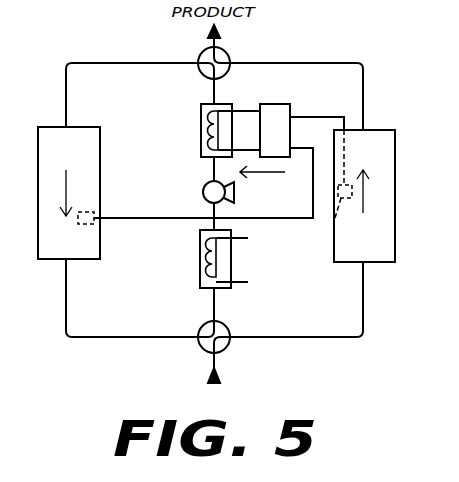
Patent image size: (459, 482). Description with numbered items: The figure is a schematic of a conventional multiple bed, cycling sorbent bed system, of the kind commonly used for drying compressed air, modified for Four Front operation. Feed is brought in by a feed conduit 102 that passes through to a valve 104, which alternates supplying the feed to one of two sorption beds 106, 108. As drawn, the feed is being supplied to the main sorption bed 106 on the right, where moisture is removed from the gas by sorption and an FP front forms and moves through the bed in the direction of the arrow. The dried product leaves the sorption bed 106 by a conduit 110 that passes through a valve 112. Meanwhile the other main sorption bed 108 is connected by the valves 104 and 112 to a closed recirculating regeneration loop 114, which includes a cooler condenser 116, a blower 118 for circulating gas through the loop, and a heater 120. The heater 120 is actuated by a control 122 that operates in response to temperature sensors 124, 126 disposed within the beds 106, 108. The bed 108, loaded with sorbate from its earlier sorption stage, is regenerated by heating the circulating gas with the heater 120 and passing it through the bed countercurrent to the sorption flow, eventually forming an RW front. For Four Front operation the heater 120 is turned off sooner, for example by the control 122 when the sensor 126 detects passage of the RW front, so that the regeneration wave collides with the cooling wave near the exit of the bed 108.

The feed conduit 102 is at (216, 363).
The valve 104 is at (226, 326).
The main sorption bed 106 is at (395, 160).
The main sorption bed 108 is at (100, 152).
The conduit 110 is at (365, 83).
The valve 112 is at (225, 52).
The regeneration loop 114 is at (285, 172).
The cooler condenser 116 is at (230, 263).
The blower 118 is at (258, 183).
The heater 120 is at (228, 104).
The control 122 is at (275, 104).
The temperature sensor 124 is at (335, 218).
The temperature sensor 126 is at (97, 213).